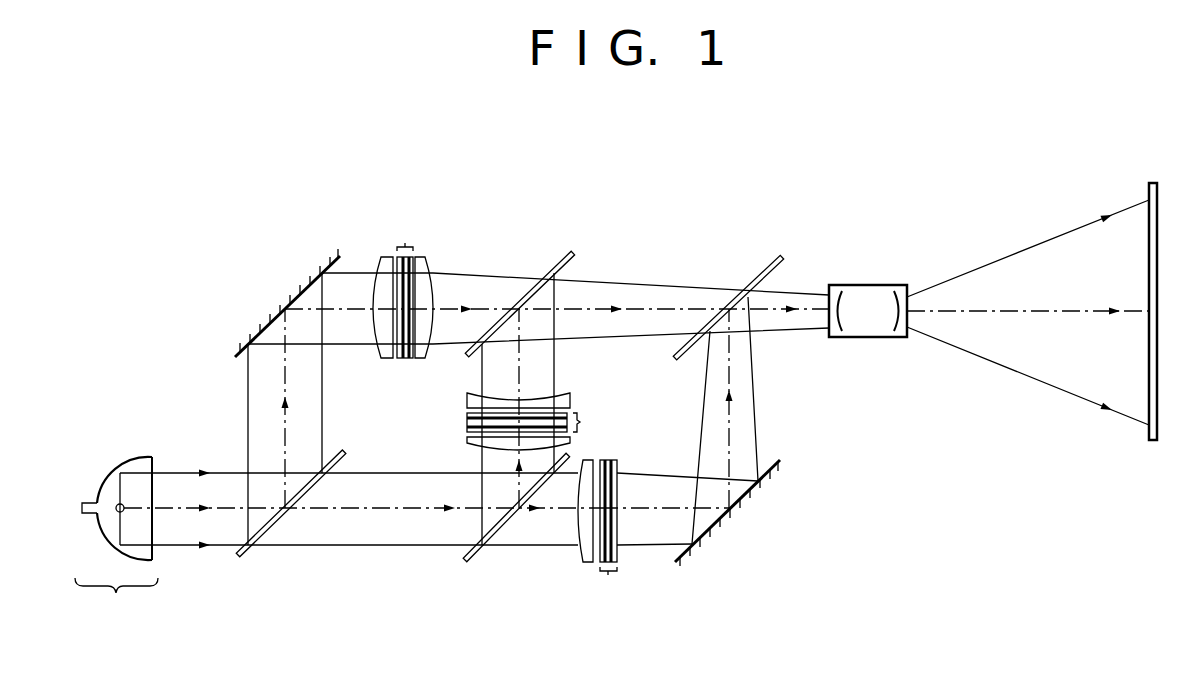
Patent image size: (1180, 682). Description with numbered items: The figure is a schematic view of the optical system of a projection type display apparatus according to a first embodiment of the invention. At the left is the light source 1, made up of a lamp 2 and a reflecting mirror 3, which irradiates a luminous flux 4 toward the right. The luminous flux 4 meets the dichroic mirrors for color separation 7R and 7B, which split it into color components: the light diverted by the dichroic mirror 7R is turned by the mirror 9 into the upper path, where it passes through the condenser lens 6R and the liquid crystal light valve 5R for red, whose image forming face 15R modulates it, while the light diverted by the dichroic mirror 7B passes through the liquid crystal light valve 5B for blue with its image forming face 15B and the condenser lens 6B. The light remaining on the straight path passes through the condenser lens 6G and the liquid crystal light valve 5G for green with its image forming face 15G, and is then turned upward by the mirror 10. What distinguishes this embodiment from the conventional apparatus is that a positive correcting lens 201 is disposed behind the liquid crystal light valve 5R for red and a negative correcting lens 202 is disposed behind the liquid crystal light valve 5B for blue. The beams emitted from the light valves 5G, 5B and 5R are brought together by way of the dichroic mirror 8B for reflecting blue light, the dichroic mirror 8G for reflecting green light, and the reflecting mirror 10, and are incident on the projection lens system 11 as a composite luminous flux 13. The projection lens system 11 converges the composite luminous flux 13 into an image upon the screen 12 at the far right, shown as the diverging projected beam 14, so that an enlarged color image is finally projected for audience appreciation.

The light source 1 is at (126, 627).
The lamp 2 is at (116, 504).
The reflecting mirror 3 is at (143, 457).
The luminous flux 4 is at (185, 548).
The dichroic mirror for color separation 7R is at (247, 559).
The dichroic mirror for color separation 7B is at (473, 556).
The mirror 9 is at (318, 270).
The mirror 10 is at (733, 524).
The condenser lens 6R is at (389, 256).
The liquid crystal light valve 5R is at (405, 243).
The image forming face 15R is at (405, 358).
The positive correcting lens 201 is at (427, 257).
The negative correcting lens 202 is at (572, 393).
The liquid crystal light valve 5B is at (582, 422).
The image forming face 15B is at (467, 420).
The condenser lens 6B is at (571, 439).
The condenser lens 6G is at (587, 562).
The liquid crystal light valve 5G is at (608, 576).
The image forming face 15G is at (612, 459).
The dichroic mirror for color composition 8B is at (573, 253).
The dichroic mirror for color composition 8G is at (778, 257).
The composite luminous flux 13 is at (800, 333).
The projection lens system 11 is at (877, 338).
The projected light beam 14 is at (1003, 368).
The screen 12 is at (1147, 443).